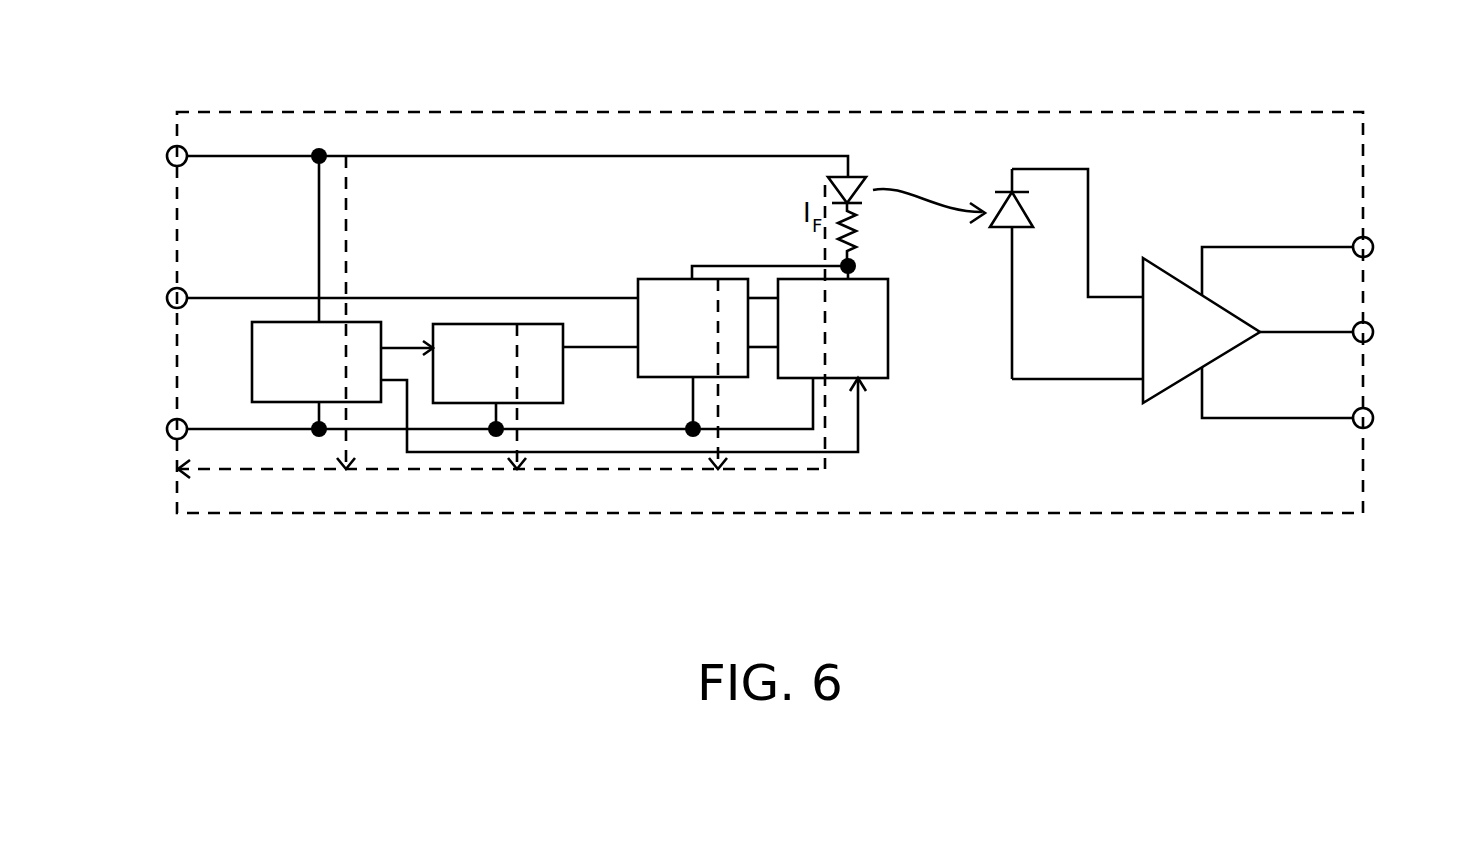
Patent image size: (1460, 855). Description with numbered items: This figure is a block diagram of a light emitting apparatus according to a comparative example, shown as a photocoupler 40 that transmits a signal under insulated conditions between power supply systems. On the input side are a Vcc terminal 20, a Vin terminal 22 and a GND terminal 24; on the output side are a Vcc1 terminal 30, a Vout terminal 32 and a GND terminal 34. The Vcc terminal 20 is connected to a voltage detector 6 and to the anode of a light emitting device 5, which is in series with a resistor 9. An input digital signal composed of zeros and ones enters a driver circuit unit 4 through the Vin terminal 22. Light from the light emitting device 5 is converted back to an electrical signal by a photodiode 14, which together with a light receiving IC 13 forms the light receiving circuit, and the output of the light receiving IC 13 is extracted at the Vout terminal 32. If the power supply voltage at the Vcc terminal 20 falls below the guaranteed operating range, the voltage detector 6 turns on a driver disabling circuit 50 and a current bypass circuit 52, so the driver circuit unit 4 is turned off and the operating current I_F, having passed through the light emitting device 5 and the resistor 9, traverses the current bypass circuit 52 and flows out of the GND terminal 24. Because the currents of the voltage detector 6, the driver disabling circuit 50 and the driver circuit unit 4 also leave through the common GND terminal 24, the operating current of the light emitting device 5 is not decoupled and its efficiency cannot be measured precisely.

The driver circuit unit 4 is at (660, 292).
The light emitting device 5 is at (843, 180).
The voltage detector 6 is at (305, 340).
The resistor 9 is at (858, 232).
The light receiving IC 13 is at (1150, 272).
The photodiode 14 is at (1012, 212).
The Vcc terminal 20 is at (172, 147).
The Vin terminal 22 is at (172, 289).
The GND terminal 24 is at (172, 420).
The Vcc1 terminal 30 is at (1372, 240).
The Vout terminal 32 is at (1372, 325).
The GND terminal 34 is at (1372, 410).
The photocoupler 40 is at (1108, 525).
The driver disabling circuit 50 is at (500, 345).
The current bypass circuit 52 is at (862, 336).